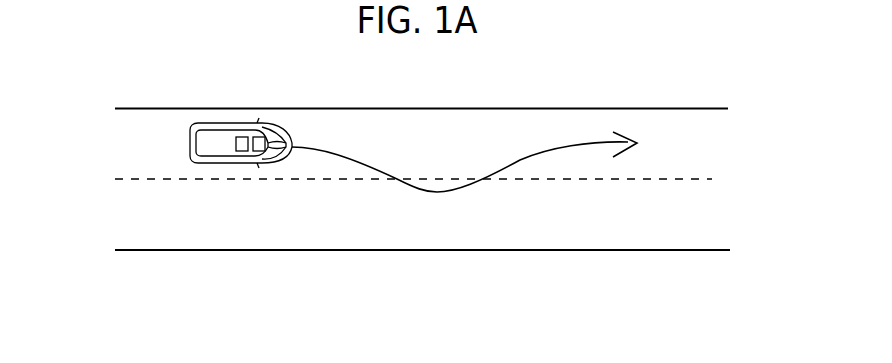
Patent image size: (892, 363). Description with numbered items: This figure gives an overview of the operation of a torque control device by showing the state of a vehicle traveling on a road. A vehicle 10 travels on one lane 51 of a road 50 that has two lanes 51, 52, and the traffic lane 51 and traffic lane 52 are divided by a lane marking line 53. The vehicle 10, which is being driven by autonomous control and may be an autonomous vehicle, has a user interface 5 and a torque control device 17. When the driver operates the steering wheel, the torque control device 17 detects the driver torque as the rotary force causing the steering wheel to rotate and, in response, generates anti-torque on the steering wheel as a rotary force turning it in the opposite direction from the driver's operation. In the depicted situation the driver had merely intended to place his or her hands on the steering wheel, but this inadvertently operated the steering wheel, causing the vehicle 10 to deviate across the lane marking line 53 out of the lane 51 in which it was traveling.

The vehicle 10 is at (200, 152).
The user interface 5 is at (246, 166).
The torque control device 17 is at (275, 166).
The road 50 is at (582, 108).
The lane 51 is at (680, 162).
The lane 52 is at (680, 217).
The lane marking line 53 is at (717, 179).